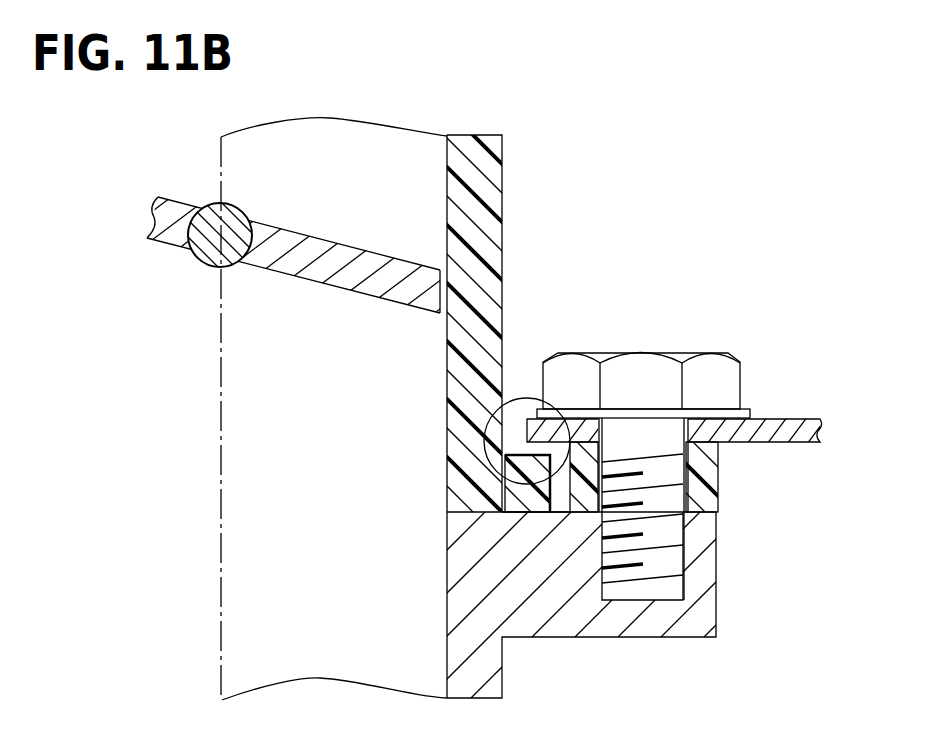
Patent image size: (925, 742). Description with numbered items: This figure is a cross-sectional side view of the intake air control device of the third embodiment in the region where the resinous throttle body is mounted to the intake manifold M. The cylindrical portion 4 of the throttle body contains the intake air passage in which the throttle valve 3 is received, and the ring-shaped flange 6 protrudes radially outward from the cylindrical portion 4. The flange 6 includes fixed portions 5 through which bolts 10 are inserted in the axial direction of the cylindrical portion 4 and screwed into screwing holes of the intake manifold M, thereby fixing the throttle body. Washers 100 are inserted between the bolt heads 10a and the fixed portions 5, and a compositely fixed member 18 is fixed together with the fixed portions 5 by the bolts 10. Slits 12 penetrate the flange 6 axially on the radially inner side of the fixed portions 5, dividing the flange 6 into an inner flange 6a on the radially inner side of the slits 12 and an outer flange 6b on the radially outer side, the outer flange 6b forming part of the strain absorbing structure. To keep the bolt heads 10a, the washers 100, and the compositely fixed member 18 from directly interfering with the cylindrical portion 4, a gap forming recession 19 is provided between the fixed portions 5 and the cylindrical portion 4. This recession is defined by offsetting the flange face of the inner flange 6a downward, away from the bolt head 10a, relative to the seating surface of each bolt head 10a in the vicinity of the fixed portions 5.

The throttle valve 3 is at (387, 273).
The cylindrical portion 4 is at (493, 178).
The fixed portions 5 is at (708, 480).
The flange 6 is at (443, 410).
The inner flange 6a is at (525, 478).
The outer flange 6b is at (565, 502).
The bolts 10 is at (645, 425).
The bolt heads 10a is at (634, 366).
The slits 12 is at (557, 513).
The compositely fixed member 18 is at (778, 425).
The gap forming recession 19 is at (519, 398).
The washers 100 is at (742, 409).
The intake manifold M is at (708, 556).